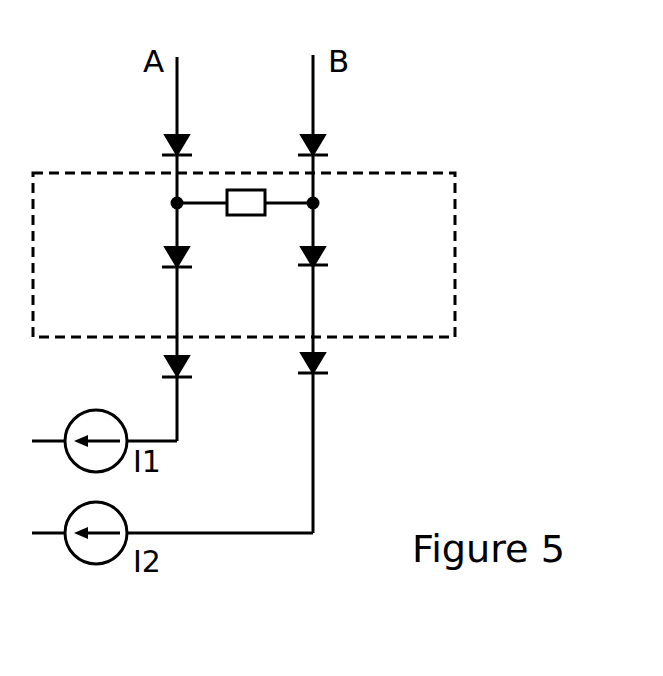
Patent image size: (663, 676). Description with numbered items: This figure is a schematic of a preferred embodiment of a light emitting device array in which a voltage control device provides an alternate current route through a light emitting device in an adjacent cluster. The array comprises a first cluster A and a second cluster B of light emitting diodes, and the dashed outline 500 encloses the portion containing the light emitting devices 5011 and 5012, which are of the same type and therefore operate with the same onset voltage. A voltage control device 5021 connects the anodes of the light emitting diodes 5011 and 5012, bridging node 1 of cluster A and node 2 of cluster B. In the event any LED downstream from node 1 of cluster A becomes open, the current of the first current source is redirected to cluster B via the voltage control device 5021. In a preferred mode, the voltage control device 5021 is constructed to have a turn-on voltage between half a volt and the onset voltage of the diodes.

The protection circuit 500 is at (402, 172).
The light emitting device 5011 is at (155, 260).
The light emitting device 5012 is at (330, 252).
The voltage control device 5021 is at (242, 187).
The node 1 is at (161, 201).
The node 2 is at (330, 202).